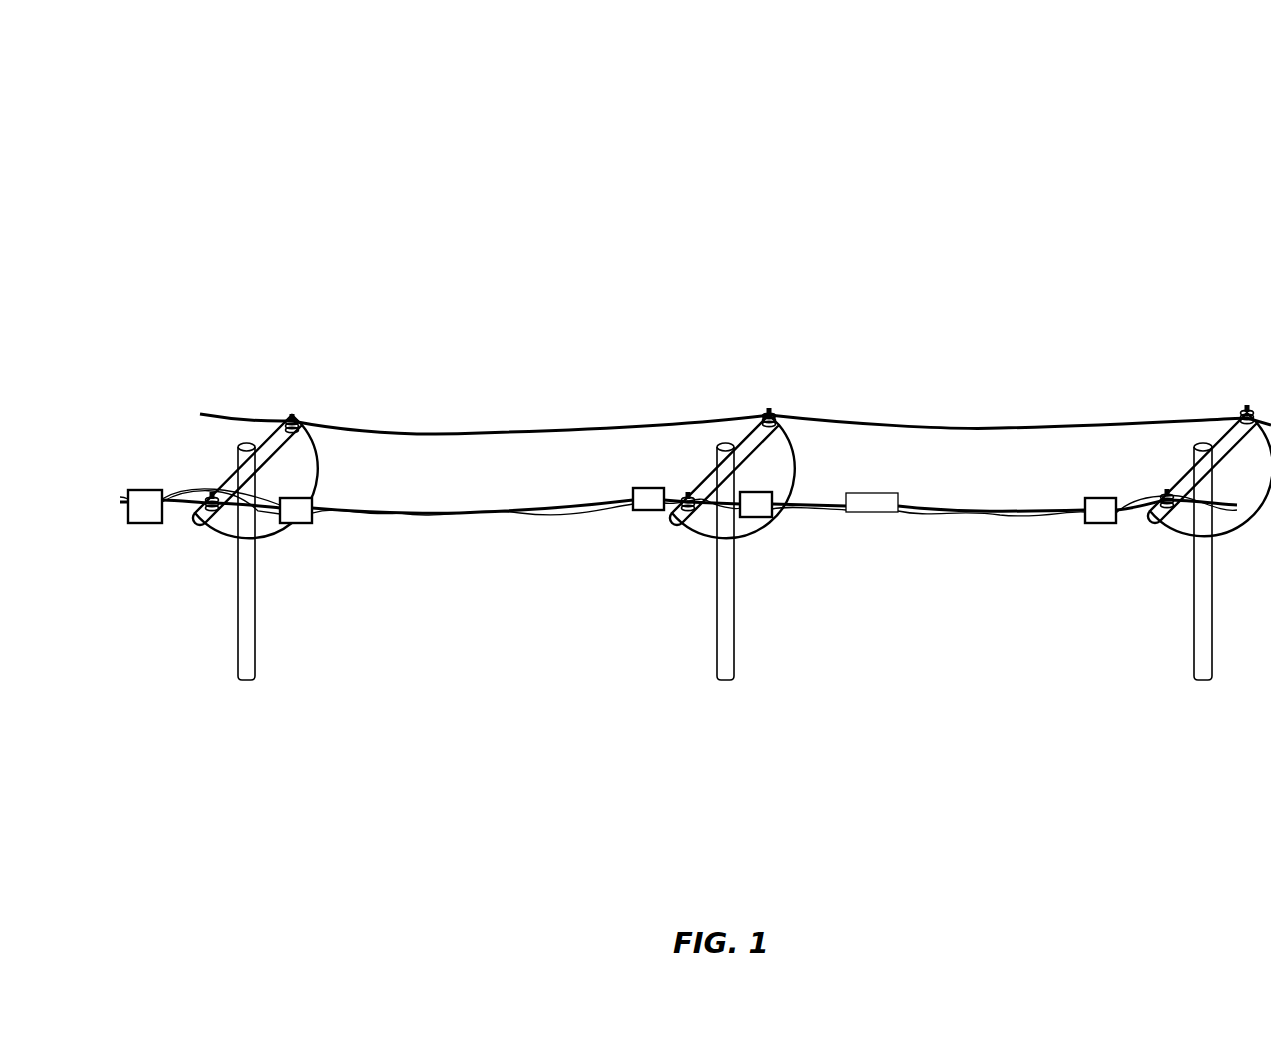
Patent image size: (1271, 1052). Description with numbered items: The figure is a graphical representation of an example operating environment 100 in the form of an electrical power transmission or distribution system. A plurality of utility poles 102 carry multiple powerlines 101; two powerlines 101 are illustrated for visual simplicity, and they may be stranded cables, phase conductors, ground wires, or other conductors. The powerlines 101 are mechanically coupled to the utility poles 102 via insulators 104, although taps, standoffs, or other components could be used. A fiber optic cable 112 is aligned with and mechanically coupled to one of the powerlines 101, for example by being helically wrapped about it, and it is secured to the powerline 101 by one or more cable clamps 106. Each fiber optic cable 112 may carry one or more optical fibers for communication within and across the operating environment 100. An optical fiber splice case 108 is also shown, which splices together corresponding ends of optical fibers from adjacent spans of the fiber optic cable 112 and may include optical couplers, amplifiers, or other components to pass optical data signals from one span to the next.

The operating environment 100 is at (122, 156).
The powerline 101 is at (1077, 432).
The utility pole 102 is at (243, 681).
The insulator 104 is at (291, 412).
The cable clamp 106 is at (1100, 524).
The optical fiber splice case 108 is at (817, 650).
The fiber optic cable 112 is at (403, 517).